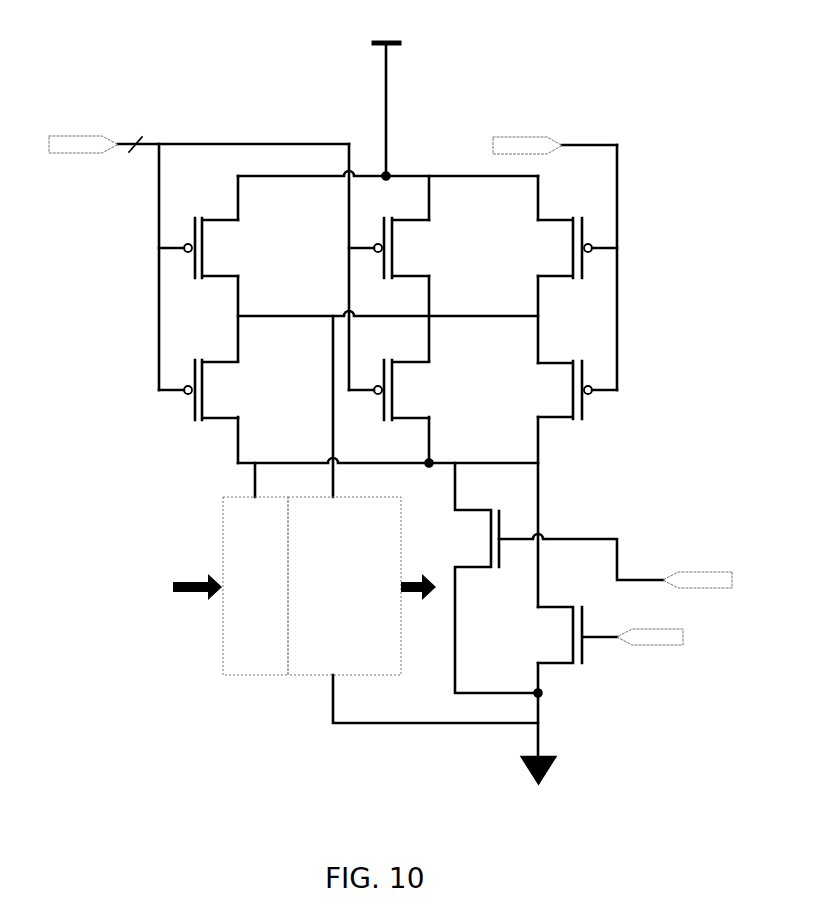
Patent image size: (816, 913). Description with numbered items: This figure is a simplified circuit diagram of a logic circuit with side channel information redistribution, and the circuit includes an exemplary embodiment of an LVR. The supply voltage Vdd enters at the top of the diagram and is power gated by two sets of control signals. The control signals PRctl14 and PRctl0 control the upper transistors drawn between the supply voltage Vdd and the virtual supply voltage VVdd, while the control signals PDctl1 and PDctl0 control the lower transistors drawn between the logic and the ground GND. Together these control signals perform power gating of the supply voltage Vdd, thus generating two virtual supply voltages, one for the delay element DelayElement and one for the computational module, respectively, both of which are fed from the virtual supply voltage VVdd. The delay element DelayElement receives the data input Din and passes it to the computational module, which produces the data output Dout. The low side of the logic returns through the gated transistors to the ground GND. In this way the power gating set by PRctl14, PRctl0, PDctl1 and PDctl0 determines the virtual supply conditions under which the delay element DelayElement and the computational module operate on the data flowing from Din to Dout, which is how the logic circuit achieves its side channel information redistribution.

The supply voltage Vdd is at (385, 95).
The virtual supply voltage VVdd is at (355, 465).
The ground GND is at (564, 739).
The control signals PR_ctl[1-4] PRctl14 is at (182, 246).
The control signal PR_ctl[0] PRctl0 is at (537, 250).
The control signal PD_ctl[1] PDctl1 is at (605, 578).
The control signal PD_ctl[0] PDctl0 is at (634, 630).
The delay element DelayElement is at (255, 586).
The data input Din is at (195, 605).
The data output Dout is at (420, 614).